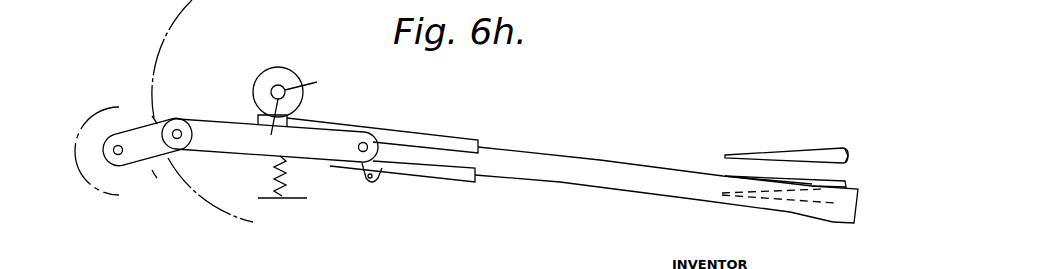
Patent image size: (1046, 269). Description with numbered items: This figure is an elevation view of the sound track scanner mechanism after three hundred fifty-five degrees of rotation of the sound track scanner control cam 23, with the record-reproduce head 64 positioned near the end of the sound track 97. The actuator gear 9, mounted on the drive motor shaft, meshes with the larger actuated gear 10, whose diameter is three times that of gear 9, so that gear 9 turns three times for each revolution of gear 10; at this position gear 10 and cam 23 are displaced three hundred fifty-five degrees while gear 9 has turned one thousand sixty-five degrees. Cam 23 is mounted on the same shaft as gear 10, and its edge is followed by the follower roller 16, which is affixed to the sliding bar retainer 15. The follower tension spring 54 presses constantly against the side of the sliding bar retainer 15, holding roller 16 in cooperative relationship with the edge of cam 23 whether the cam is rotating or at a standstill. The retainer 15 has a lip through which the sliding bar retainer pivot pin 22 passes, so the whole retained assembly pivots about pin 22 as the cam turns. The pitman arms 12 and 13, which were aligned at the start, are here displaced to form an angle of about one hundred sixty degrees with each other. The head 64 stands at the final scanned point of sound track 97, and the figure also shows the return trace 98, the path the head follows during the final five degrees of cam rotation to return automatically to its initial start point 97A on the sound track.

The actuator gear 9 is at (99, 111).
The actuated gear 10 is at (180, 15).
The pitman arm 12 is at (160, 124).
The pitman arm 13 is at (237, 148).
The sliding bar retainer 15 is at (427, 142).
The follower roller 16 is at (290, 120).
The sliding bar retainer pivot pin 22 is at (373, 182).
The sound track scanner control cam 23 is at (283, 70).
The follower tension spring 54 is at (292, 180).
The record-reproduce head 64 is at (838, 221).
The sound track 97 is at (793, 151).
The point 97a of sound track 97A is at (835, 203).
The return trace 98 is at (848, 162).